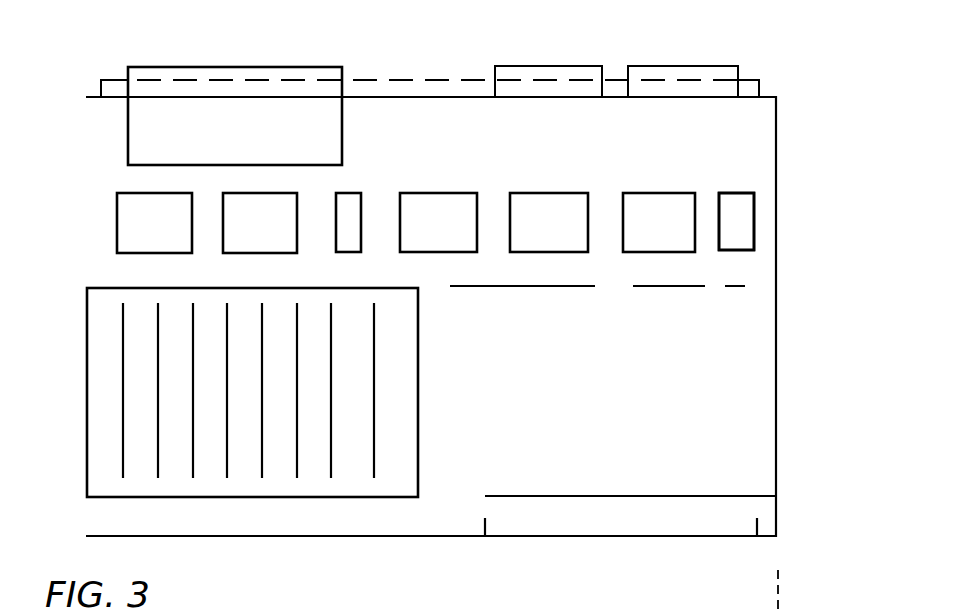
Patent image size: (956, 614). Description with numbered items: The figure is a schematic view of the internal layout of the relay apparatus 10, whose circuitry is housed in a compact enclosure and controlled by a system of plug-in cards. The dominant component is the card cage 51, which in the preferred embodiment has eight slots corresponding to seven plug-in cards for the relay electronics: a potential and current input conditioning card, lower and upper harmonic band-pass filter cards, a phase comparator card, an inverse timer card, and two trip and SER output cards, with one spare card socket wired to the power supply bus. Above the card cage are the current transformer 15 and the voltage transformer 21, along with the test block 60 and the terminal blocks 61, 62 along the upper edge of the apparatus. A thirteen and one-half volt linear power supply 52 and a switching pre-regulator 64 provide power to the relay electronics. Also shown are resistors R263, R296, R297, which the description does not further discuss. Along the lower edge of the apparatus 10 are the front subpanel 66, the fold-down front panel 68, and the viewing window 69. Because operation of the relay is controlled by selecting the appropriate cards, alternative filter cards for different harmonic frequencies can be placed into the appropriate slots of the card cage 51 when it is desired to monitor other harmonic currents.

The apparatus 10 is at (382, 70).
The current transformer 15 is at (117, 210).
The voltage transformer 21 is at (297, 222).
The resistor R263 is at (361, 203).
The test block 60 is at (343, 127).
The terminal block 61 is at (558, 66).
The terminal block 62 is at (708, 66).
The resistor R296 is at (754, 200).
The resistor R297 is at (779, 221).
The linear power supply 52 is at (515, 286).
The switching pre-regulator 64 is at (673, 286).
The card cage 51 is at (419, 406).
The front subpanel 66 is at (640, 496).
The fold-down front panel 68 is at (447, 534).
The viewing window 69 is at (540, 536).